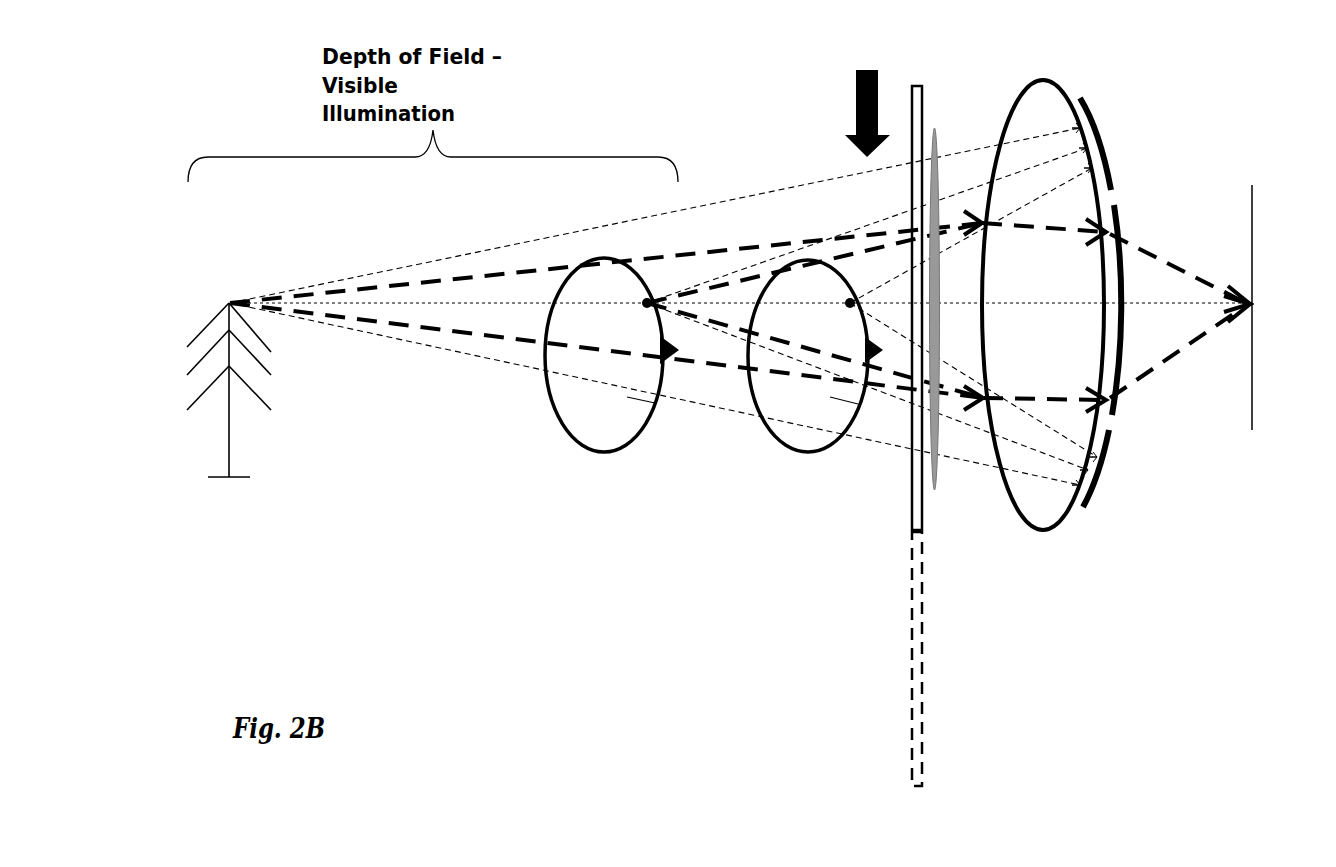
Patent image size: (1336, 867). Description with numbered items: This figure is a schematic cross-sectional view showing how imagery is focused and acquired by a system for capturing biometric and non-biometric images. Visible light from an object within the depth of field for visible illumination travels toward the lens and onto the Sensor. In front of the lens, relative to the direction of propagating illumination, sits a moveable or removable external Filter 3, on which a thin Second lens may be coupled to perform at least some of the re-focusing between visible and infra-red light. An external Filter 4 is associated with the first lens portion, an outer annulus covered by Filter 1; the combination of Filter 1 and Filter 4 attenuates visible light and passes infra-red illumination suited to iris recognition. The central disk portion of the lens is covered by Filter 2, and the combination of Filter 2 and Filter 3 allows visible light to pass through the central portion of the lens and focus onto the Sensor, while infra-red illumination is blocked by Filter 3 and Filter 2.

The filter 1 Filter 1 is at (1097, 117).
The filter 2 Filter 2 is at (1125, 362).
The filter 3 Filter 3 is at (924, 516).
The filter 4 Filter 4 is at (925, 685).
The second lens Second lens is at (942, 484).
The element lens is at (1043, 305).
The sensor Sensor is at (1270, 307).